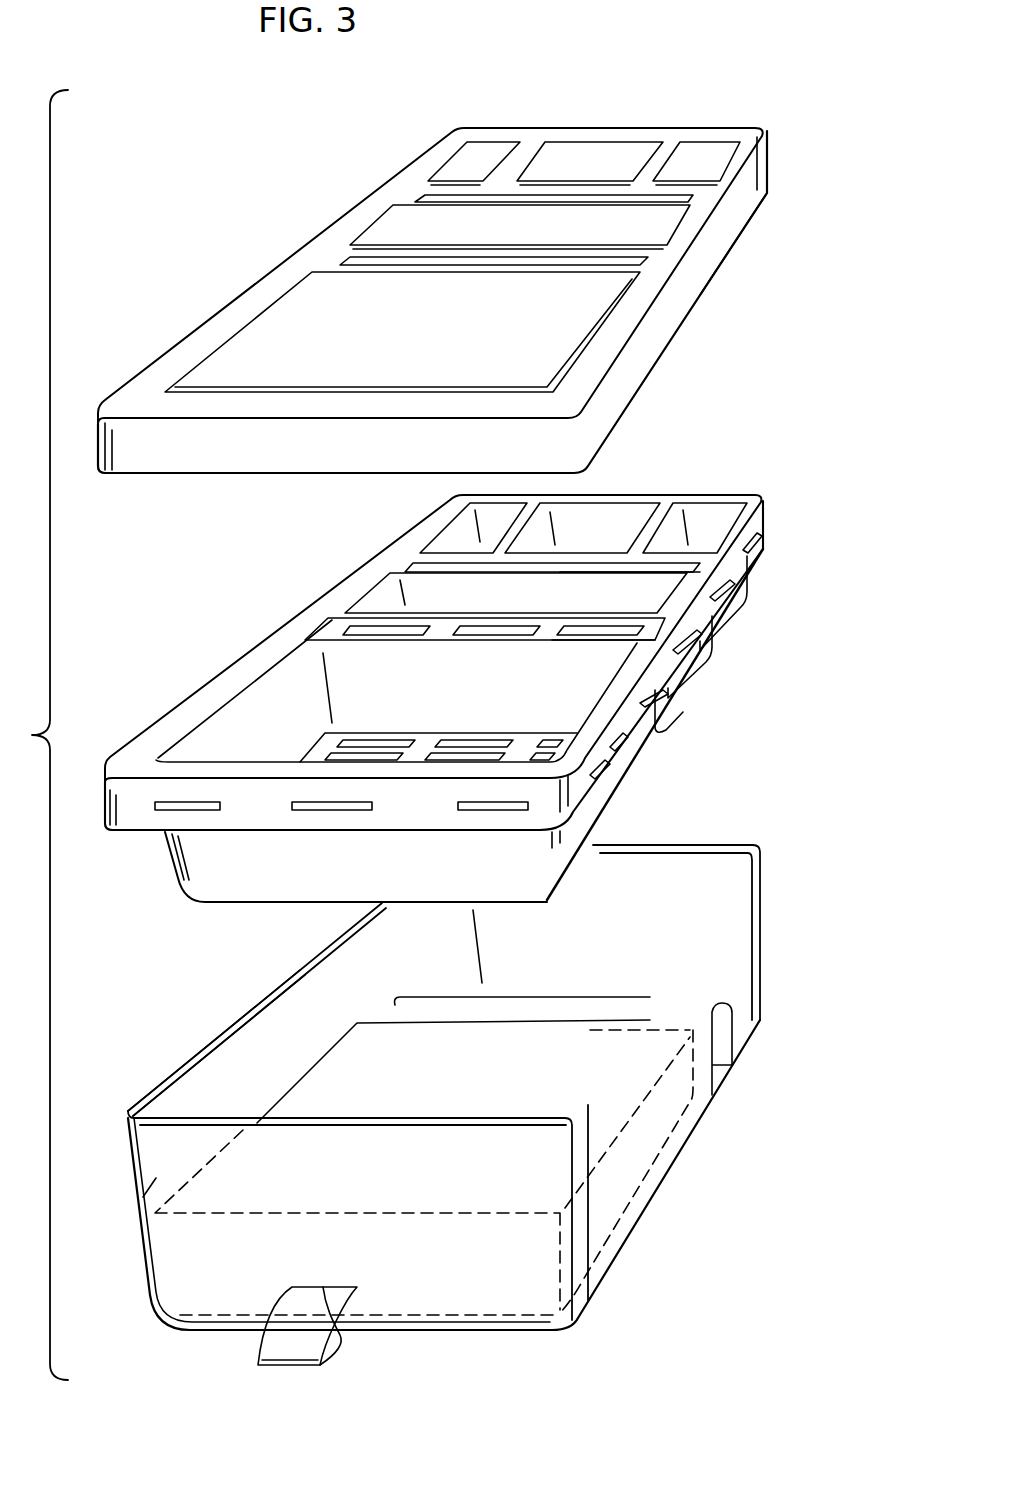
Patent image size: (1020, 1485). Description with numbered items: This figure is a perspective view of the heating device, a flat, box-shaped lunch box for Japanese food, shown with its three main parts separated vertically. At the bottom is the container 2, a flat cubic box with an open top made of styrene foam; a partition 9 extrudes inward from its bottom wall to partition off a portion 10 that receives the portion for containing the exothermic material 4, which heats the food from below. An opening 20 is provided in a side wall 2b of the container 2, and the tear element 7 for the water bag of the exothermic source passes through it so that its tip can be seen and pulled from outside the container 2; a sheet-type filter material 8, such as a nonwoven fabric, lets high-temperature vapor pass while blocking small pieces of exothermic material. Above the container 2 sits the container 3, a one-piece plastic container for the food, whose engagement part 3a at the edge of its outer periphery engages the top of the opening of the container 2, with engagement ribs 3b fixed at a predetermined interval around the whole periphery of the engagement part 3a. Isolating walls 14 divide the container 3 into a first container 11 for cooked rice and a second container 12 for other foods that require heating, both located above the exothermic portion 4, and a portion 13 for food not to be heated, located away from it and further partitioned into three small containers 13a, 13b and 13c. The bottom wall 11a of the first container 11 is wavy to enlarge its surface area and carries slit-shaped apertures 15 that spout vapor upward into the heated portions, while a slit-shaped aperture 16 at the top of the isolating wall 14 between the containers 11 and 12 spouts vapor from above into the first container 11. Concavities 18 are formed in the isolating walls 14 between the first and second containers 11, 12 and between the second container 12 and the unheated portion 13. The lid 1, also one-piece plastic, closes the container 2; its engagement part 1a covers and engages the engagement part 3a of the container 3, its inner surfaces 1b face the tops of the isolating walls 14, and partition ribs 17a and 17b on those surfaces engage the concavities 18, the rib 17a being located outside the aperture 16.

The lid 1 is at (418, 316).
The engagement part 1a is at (100, 475).
The inner surfaces 1b is at (703, 208).
The partition rib 17a is at (350, 245).
The partition rib 17b is at (428, 180).
The container for contents of food 3 is at (456, 641).
The engagement part 3a is at (120, 797).
The engagement ribs 3b is at (300, 812).
The first container 11 is at (288, 690).
The bottom wall 11a is at (310, 748).
The second container 12 is at (388, 612).
The portion for containing material not to be heated 13 is at (630, 465).
The small container 13a is at (512, 512).
The small container 13b is at (638, 512).
The small container 13c is at (650, 415).
The isolating walls 14 is at (497, 543).
The slit-shaped apertures 15 is at (455, 742).
The slit-shaped aperture 16 is at (415, 632).
The concavities 18 is at (560, 562).
The container 2 is at (423, 1109).
The side wall 2b is at (140, 1198).
The portion for containing exothermic material 4 is at (285, 1080).
The tear element 7 is at (280, 1348).
The filter material 8 is at (355, 1052).
The partition 9 is at (600, 1003).
The portion 10 is at (650, 1192).
The opening 20 is at (338, 1335).